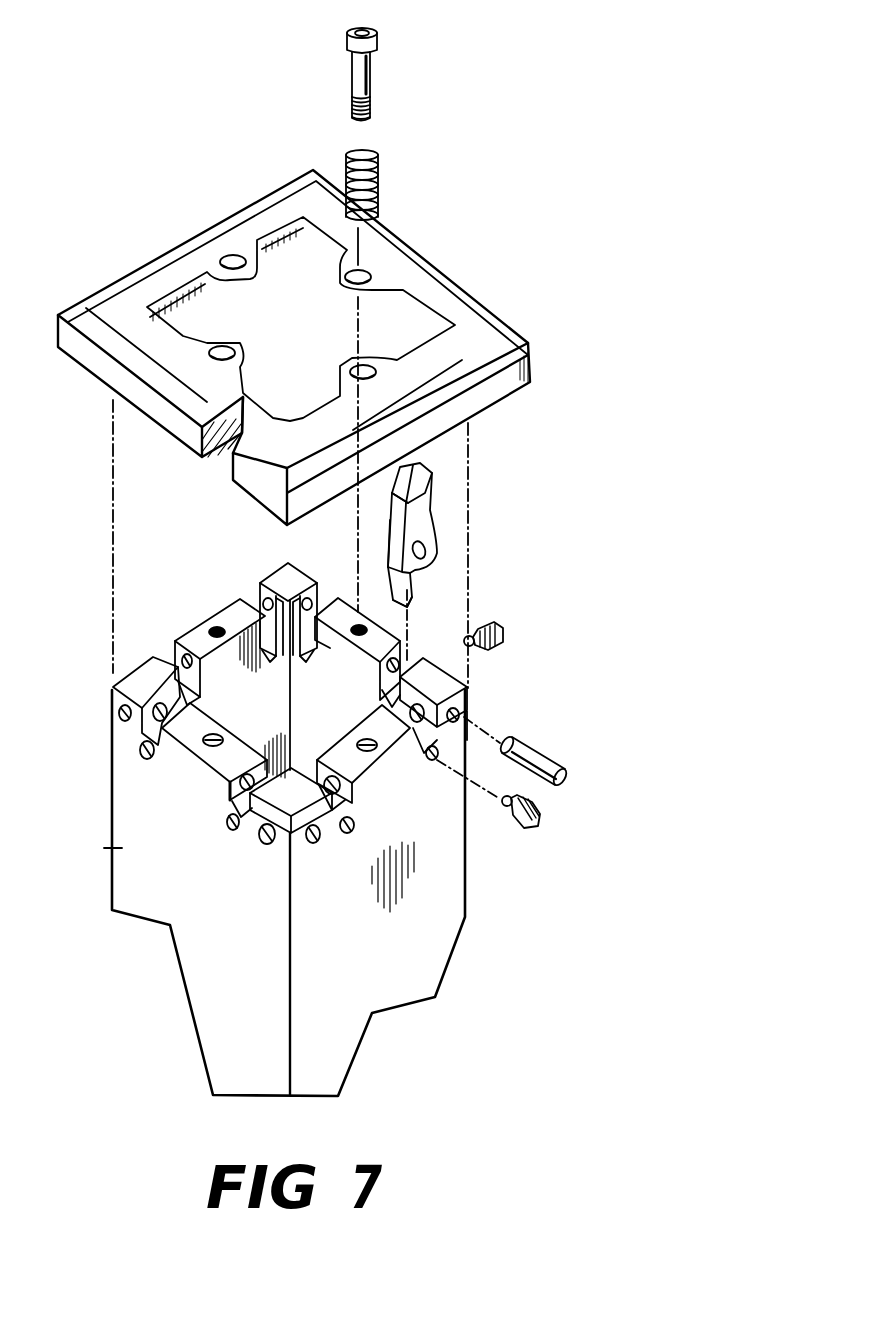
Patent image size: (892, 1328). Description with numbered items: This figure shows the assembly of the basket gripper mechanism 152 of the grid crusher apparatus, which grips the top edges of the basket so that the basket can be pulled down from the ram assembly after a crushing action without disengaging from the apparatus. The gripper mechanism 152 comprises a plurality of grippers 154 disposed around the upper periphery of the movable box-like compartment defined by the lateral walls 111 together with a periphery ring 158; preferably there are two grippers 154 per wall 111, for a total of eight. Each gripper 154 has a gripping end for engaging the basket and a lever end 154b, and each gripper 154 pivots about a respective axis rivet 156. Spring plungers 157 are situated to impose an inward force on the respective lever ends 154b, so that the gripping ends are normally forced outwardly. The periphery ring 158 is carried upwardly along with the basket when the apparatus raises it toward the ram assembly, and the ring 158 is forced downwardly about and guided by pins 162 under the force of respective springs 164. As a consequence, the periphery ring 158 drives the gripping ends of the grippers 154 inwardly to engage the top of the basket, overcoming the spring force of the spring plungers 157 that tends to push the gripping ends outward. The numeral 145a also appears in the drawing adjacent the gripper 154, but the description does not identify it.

The lateral walls 111 is at (120, 848).
The basket gripper mechanism 152 is at (703, 272).
The periphery ring 158 is at (418, 282).
The pins 162 is at (375, 66).
The springs 164 is at (378, 181).
The grippers 154 is at (384, 543).
The lever end 154b is at (408, 592).
The lever bearing surface 145a is at (388, 527).
The axis rivet 156 is at (537, 758).
The spring plungers 157 is at (505, 642).